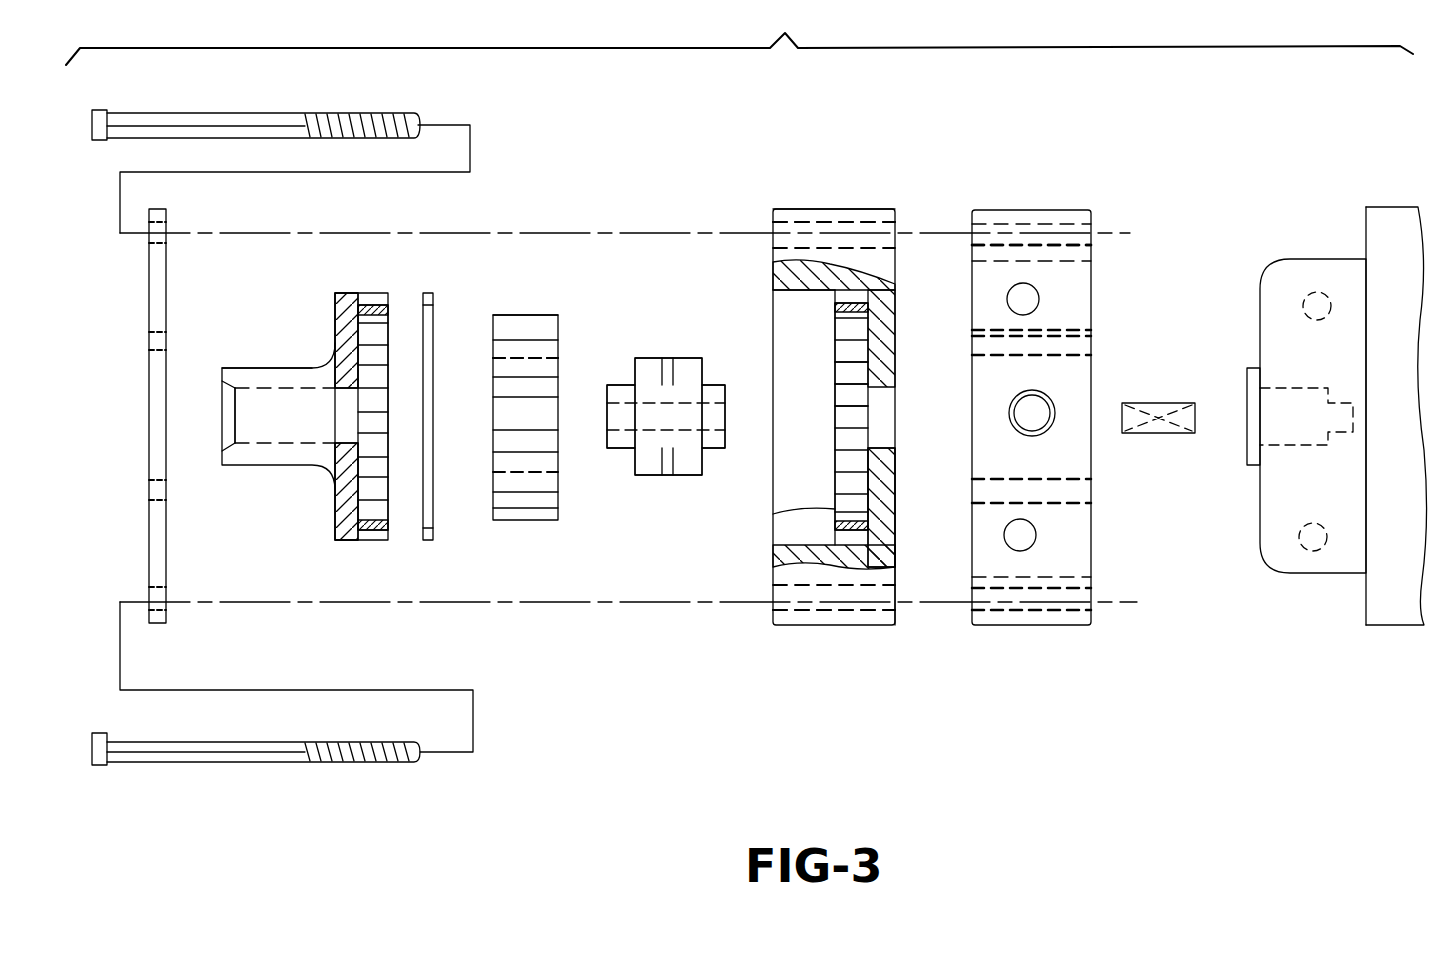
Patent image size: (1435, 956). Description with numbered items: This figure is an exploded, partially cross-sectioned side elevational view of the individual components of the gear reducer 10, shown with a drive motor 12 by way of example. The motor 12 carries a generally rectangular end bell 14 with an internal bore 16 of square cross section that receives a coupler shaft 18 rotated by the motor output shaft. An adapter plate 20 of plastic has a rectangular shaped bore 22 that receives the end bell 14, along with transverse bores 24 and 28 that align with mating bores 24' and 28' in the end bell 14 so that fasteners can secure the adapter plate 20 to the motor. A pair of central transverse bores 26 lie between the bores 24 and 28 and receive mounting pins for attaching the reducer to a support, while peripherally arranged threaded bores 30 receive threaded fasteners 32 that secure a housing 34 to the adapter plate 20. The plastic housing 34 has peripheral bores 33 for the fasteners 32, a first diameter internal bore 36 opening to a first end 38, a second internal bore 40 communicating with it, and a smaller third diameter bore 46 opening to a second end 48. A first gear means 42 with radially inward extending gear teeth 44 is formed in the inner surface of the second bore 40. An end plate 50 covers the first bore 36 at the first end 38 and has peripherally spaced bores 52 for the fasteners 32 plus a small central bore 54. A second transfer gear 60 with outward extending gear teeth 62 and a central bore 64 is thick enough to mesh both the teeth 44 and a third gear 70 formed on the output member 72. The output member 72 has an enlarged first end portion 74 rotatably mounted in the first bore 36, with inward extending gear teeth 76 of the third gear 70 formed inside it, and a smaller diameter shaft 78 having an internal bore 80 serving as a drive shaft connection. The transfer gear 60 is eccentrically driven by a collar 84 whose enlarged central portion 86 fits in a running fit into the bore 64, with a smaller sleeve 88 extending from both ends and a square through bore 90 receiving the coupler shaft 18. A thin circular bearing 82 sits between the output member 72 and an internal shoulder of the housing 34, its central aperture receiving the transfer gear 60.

The gear reducer 10 is at (739, 33).
The drive motor 12 is at (1385, 215).
The end bell 14 is at (1310, 262).
The internal bore 16 is at (1286, 392).
The coupler shaft 18 is at (1162, 432).
The adapter plate 20 is at (1022, 627).
The rectangular shaped bore 22 is at (1050, 264).
The transverse extending bores 24 is at (972, 229).
The mating bores 24' is at (1257, 241).
The transverse bores 26 is at (1038, 418).
The transverse extending bores 28 is at (1083, 560).
The mating bores 28' is at (1306, 603).
The threaded bores 30 is at (1030, 232).
The threaded fasteners 32 is at (191, 115).
The peripheral bores 33 is at (810, 222).
The housing 34 is at (842, 626).
The first diameter internal bore 36 is at (768, 296).
The first end 38 is at (773, 218).
The second internal bore 40 is at (850, 338).
The first gear means 42 is at (850, 384).
The gear teeth 44 is at (773, 514).
The third diameter bore 46 is at (870, 448).
The second end 48 is at (893, 627).
The end plate 50 is at (153, 624).
The peripherally spaced bores 52 is at (167, 236).
The centrally located bore 54 is at (160, 338).
The second transfer gear 60 is at (520, 522).
The gear teeth 62 is at (508, 318).
The central bore 64 is at (492, 362).
The third gear 70 is at (348, 332).
The output member 72 is at (262, 368).
The first end portion 74 is at (362, 543).
The gear teeth 76 is at (352, 493).
The shaft 78 is at (232, 366).
The internal bore 80 is at (240, 443).
The bearing 82 is at (430, 545).
The collar 84 is at (640, 353).
The central portion 86 is at (668, 358).
The sleeve 88 is at (712, 385).
The through bore 90 is at (610, 420).